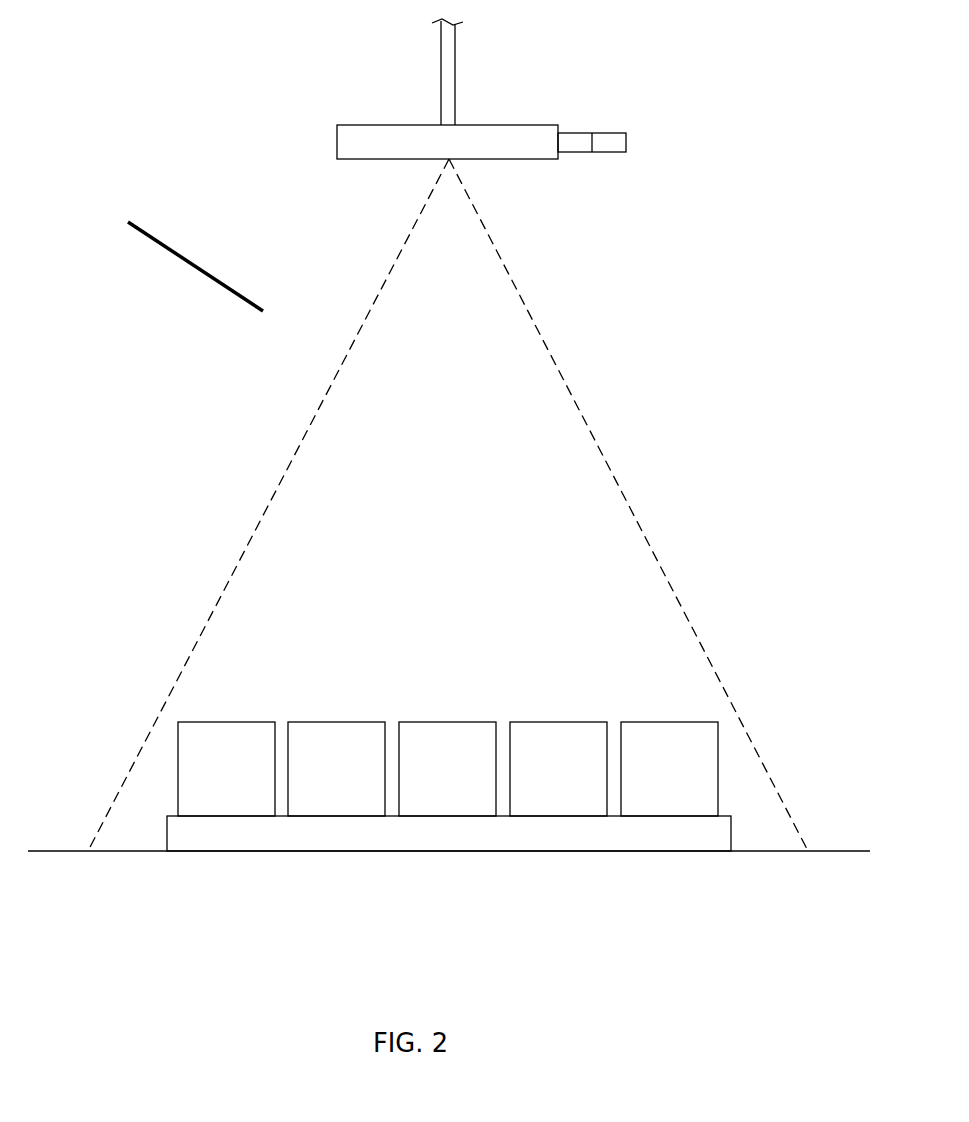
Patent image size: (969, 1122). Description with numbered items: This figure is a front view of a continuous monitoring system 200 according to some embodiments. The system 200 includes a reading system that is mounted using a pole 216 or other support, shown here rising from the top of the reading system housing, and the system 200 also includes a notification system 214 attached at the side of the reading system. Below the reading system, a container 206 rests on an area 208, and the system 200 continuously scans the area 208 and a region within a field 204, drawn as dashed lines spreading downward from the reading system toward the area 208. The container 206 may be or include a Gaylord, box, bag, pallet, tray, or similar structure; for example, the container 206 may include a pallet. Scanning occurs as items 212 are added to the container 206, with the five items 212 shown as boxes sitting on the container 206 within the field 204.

The system 200 is at (175, 251).
The field 204 is at (595, 445).
The container 206 is at (549, 842).
The area 208 is at (750, 851).
The items 212 is at (192, 722).
The notification system 214 is at (578, 133).
The pole 216 is at (455, 79).